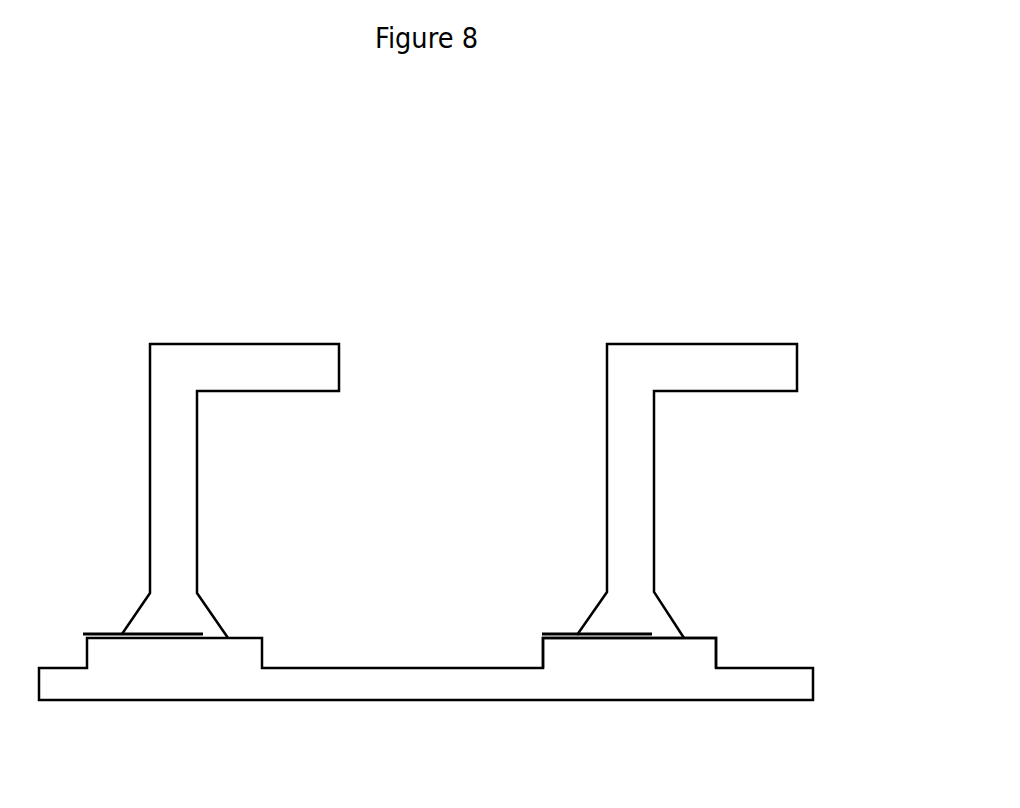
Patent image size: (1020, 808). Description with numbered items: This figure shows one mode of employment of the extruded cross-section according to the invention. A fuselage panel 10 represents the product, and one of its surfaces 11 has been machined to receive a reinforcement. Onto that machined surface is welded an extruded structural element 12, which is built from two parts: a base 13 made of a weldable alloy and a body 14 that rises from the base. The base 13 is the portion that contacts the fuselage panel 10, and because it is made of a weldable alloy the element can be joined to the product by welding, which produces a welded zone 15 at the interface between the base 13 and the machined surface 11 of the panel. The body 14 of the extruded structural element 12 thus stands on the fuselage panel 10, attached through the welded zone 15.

The fuselage panel 10 is at (796, 669).
The surface 11 is at (717, 647).
The extruded structural element 12 is at (668, 506).
The base 13 is at (541, 602).
The body 14 is at (193, 483).
The welded zone 15 is at (208, 625).